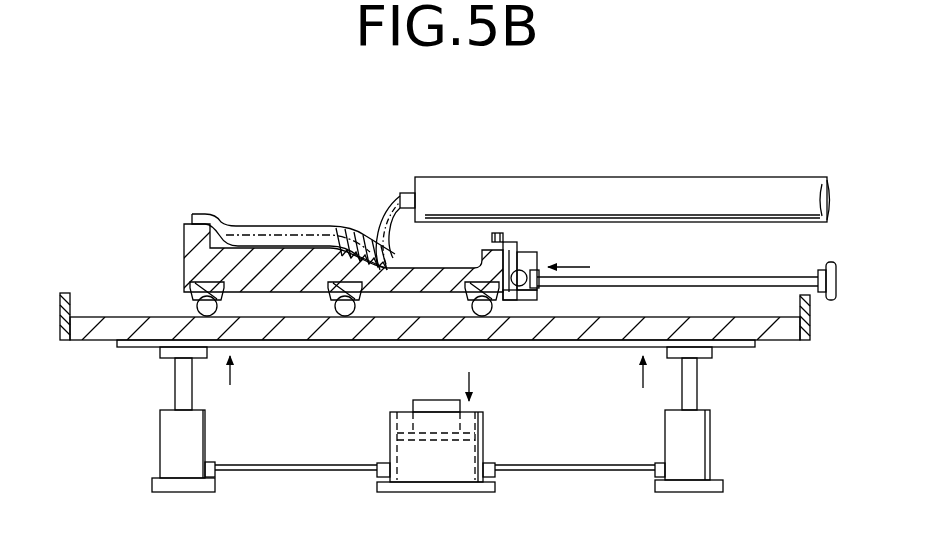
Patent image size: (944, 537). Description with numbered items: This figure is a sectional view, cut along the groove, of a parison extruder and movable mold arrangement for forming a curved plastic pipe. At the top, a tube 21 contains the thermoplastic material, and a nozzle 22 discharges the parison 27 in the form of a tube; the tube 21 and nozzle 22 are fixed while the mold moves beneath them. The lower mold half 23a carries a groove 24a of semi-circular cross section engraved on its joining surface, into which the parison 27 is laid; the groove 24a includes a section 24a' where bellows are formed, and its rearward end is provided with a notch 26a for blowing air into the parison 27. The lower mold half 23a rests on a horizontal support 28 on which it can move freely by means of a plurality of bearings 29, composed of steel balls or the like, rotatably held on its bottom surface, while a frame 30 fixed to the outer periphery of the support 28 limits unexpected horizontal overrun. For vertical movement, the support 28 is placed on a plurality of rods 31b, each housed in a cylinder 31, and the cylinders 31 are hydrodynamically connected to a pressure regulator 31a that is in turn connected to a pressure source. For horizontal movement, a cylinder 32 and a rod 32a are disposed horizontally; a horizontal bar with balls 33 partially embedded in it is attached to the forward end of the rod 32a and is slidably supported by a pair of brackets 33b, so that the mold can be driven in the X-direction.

The tube 21 is at (575, 186).
The nozzle 22 is at (410, 193).
The parison 27 is at (380, 224).
The groove 24a is at (293, 229).
The bellows-forming section of groove 24a' is at (348, 231).
The lower mold half 23a is at (184, 238).
The bearings 29 is at (197, 310).
The horizontal support 28 is at (127, 320).
The frame 30 is at (64, 297).
The balls 33 is at (535, 296).
The brackets 33b is at (520, 243).
The notch 26a is at (520, 253).
The rod 32a is at (711, 281).
The cylinder 32 is at (824, 265).
The cylinders 31 is at (210, 440).
The pressure regulator 31a is at (484, 435).
The rods 31b is at (177, 386).